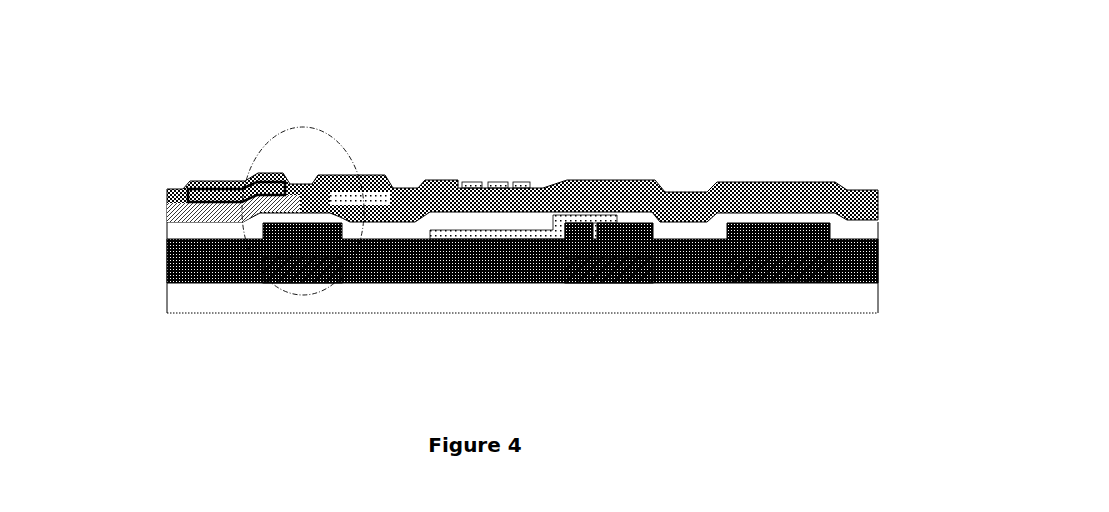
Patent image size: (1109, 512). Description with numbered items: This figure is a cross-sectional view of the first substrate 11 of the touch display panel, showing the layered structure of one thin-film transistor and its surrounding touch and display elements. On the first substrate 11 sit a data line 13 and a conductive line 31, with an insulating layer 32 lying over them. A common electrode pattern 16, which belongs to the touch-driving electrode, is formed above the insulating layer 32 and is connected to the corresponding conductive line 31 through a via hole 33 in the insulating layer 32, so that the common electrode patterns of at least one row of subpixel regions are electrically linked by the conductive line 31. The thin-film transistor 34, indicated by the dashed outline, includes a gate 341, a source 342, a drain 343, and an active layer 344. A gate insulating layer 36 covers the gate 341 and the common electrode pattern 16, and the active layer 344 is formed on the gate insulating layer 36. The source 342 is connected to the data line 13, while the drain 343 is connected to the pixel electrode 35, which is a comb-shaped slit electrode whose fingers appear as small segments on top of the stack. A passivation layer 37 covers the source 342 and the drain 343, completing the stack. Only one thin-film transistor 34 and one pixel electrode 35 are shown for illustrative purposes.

The first substrate 11 is at (848, 303).
The data line 13 is at (810, 268).
The common electrode pattern 16 is at (562, 222).
The conductive line 31 is at (642, 270).
The insulating layer 32 is at (471, 263).
The via hole 33 is at (594, 225).
The thin-film transistor 34 is at (274, 133).
The pixel electrode 35 is at (520, 180).
The gate insulating layer 36 is at (207, 230).
The passivation layer 37 is at (201, 185).
The gate 341 is at (302, 268).
The source 342 is at (200, 195).
The drain 343 is at (339, 187).
The active layer 344 is at (198, 212).